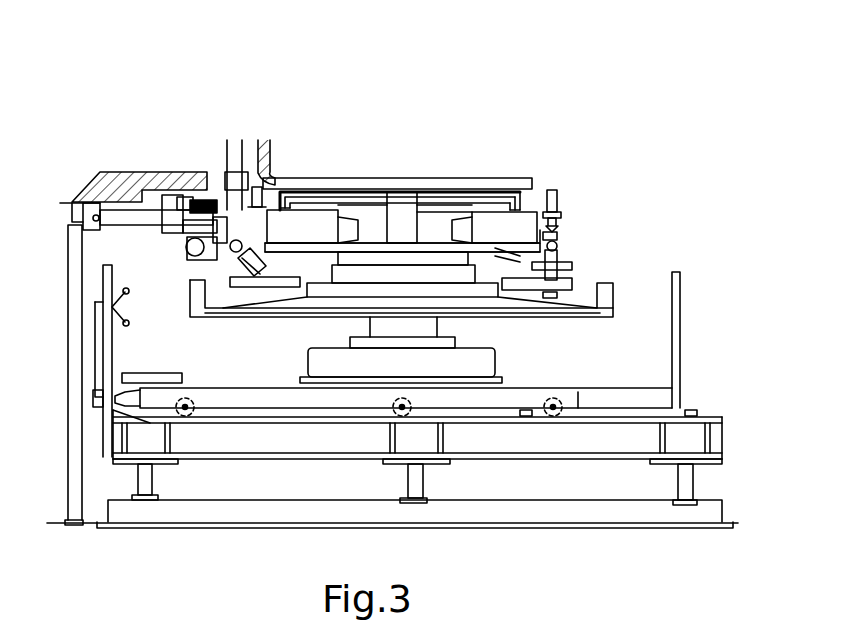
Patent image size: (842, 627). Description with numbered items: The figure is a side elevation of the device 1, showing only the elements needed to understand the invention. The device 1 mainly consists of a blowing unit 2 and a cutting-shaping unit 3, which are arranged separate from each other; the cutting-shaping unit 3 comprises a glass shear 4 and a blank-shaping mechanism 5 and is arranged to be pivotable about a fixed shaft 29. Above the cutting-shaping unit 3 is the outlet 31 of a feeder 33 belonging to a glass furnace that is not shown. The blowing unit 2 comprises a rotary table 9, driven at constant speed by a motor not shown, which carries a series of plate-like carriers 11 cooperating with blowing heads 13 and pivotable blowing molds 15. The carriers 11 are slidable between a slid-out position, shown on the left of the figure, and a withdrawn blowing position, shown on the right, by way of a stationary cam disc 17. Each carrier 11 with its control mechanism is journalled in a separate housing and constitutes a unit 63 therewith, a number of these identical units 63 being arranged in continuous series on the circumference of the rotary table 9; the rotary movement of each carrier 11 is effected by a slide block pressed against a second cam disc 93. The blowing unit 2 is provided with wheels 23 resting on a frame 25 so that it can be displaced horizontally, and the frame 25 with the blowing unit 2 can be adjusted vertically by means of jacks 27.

The device 1 is at (536, 70).
The blowing unit 2 is at (624, 226).
The cutting-shaping unit 3 is at (160, 245).
The glass shear 4 is at (207, 200).
The blank-shaping mechanism 5 is at (223, 250).
The rotary table 9 is at (373, 250).
The plate-like carrier 11 is at (560, 238).
The blowing head 13 is at (560, 201).
The pivotable blowing mold 15 is at (570, 264).
The stationary cam disc 17 is at (440, 202).
The wheels 23 is at (390, 415).
The frame 25 is at (258, 458).
The jacks 27 is at (425, 482).
The fixed shaft 29 is at (97, 203).
The outlet 31 is at (227, 190).
The feeder 33 is at (280, 143).
The unit 63 is at (313, 220).
The second cam disc 93 is at (343, 205).